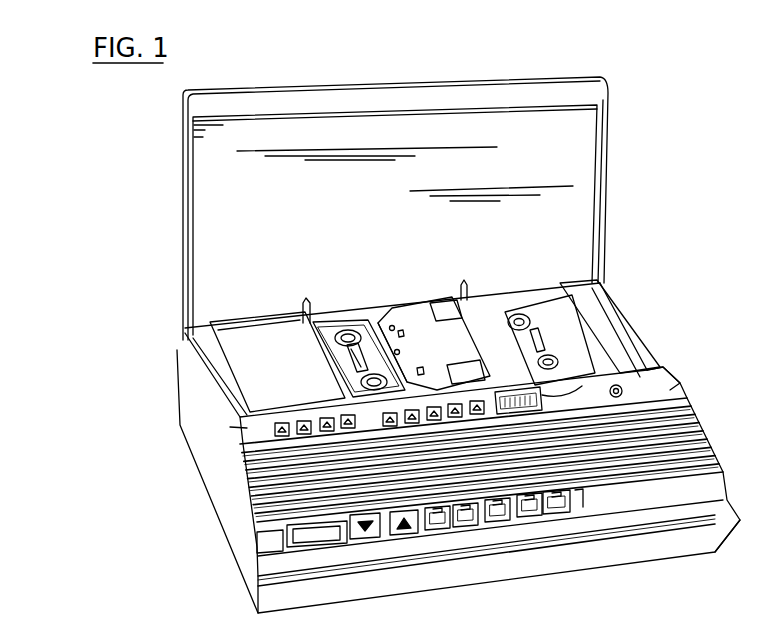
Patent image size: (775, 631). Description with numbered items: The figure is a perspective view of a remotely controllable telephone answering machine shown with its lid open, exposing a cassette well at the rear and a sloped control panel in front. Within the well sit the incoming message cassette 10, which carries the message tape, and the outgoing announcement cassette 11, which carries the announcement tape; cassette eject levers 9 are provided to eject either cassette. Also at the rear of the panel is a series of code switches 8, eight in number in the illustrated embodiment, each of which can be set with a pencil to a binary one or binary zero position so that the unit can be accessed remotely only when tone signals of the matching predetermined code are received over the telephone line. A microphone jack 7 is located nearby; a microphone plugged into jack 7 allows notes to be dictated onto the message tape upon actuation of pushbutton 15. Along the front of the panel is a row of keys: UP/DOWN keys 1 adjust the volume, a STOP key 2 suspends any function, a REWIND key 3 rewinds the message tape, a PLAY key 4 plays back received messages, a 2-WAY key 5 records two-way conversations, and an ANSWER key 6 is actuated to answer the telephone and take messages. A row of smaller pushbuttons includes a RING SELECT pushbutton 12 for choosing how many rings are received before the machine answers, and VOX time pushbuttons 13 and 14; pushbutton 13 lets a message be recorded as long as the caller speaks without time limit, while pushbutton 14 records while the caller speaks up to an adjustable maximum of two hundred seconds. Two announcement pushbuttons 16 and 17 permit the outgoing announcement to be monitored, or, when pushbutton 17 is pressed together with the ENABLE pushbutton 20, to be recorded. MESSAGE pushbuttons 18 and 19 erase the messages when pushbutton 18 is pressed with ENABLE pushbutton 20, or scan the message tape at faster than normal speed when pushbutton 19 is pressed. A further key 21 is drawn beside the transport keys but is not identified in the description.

The UP/DOWN keys 1 is at (277, 630).
The STOP key 2 is at (437, 530).
The REWIND key 3 is at (473, 527).
The PLAY key 4 is at (503, 522).
The 2-WAY key 5 is at (537, 517).
The ANSWER key 6 is at (560, 514).
The microphone jack 7 is at (622, 386).
The code switches 8 is at (542, 400).
The cassette eject levers 9 is at (462, 365).
The incoming message cassette 10 is at (497, 310).
The outgoing announcement cassette 11 is at (362, 323).
The RING SELECT pushbutton 12 is at (350, 418).
The VOX time pushbutton 13 is at (325, 420).
The VOX time pushbutton 14 is at (283, 432).
The pushbutton 15 is at (297, 430).
The announcement pushbutton 16 is at (390, 426).
The announcement pushbutton 17 is at (411, 423).
The MESSAGE pushbutton 18 is at (433, 420).
The MESSAGE pushbutton 19 is at (455, 417).
The ENABLE pushbutton 20 is at (258, 589).
The arrow key 21 is at (365, 526).